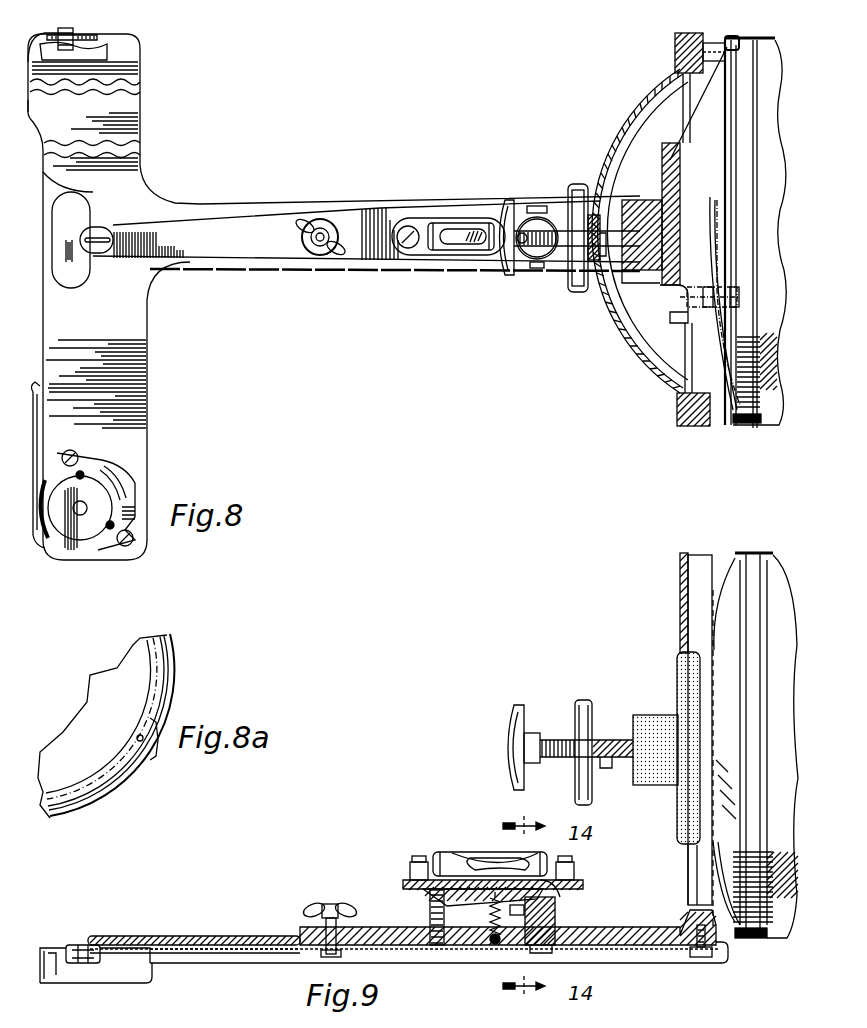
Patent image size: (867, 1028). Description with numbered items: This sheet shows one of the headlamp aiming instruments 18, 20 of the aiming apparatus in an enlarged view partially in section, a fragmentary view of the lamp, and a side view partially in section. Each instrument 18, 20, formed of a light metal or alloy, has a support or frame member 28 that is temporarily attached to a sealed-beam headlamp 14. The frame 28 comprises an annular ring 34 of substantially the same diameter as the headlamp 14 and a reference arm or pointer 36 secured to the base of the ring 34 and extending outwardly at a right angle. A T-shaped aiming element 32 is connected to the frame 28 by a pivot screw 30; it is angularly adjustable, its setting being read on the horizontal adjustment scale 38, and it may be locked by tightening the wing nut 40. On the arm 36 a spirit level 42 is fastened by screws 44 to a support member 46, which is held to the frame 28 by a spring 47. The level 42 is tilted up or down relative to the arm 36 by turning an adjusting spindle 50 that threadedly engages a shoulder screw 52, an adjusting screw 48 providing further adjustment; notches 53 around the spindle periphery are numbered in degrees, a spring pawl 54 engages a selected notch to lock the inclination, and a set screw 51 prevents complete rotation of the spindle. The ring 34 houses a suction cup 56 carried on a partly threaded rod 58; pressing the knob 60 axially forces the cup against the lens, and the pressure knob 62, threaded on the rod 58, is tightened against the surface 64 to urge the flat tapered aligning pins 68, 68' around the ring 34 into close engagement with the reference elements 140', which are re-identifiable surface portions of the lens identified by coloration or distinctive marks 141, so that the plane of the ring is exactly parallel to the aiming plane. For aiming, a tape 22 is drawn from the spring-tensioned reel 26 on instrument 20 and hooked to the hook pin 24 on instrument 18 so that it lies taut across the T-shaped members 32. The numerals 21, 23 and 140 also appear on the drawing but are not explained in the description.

In FIG. 8, the headlamp 14 is at (720, 112).
In FIG. 9, the headlamp 14 is at (706, 626).
In FIG. 8, the aiming instrument 18 is at (146, 60).
In FIG. 8, the aiming instrument 20 is at (198, 204).
In FIG. 8, the shoulder of bracket 21 is at (30, 118).
In FIG. 8, the tape 22 is at (38, 46).
In FIG. 8, the screw 23 is at (68, 455).
In FIG. 8, the hook pin 24 is at (70, 30).
In FIG. 8, the reel 26 is at (78, 556).
In FIG. 8, the frame member 28 is at (384, 214).
In FIG. 9, the frame member 28 is at (636, 924).
In FIG. 9, the pivot screw 30 is at (702, 962).
In FIG. 8, the T-shaped aiming element 32 is at (130, 136).
In FIG. 9, the T-shaped aiming element 32 is at (162, 966).
In FIG. 8, the ring 34 is at (626, 126).
In FIG. 9, the ring 34 is at (682, 568).
In FIG. 8, the reference arm 36 is at (156, 236).
In FIG. 9, the reference arm 36 is at (106, 932).
In FIG. 8, the horizontal adjustment scale 38 is at (55, 218).
In FIG. 9, the horizontal adjustment scale 38 is at (80, 936).
In FIG. 8, the wing nut 40 is at (330, 254).
In FIG. 9, the wing nut 40 is at (340, 912).
In FIG. 8, the spirit level 42 is at (442, 218).
In FIG. 9, the spirit level 42 is at (450, 856).
In FIG. 8, the screws 44 is at (408, 250).
In FIG. 9, the screws 44 is at (420, 858).
In FIG. 8, the support member 46 is at (468, 226).
In FIG. 9, the support member 46 is at (498, 890).
In FIG. 9, the spring 47 is at (486, 920).
In FIG. 9, the adjusting screw 48 is at (430, 916).
In FIG. 8, the adjusting spindle 50 is at (528, 262).
In FIG. 9, the adjusting spindle 50 is at (570, 904).
In FIG. 9, the set screw 51 is at (522, 904).
In FIG. 9, the shoulder screw 52 is at (540, 950).
In FIG. 8, the notches 53 is at (545, 216).
In FIG. 8, the spring pawl 54 is at (532, 210).
In FIG. 8, the suction cup 56 is at (660, 207).
In FIG. 9, the suction cup 56 is at (672, 716).
In FIG. 8, the rod 58 is at (594, 274).
In FIG. 9, the rod 58 is at (608, 762).
In FIG. 8, the knob 60 is at (505, 262).
In FIG. 9, the knob 60 is at (513, 716).
In FIG. 8, the pressure knob 62 is at (576, 184).
In FIG. 9, the pressure knob 62 is at (586, 700).
In FIG. 8, the surface 64 is at (594, 215).
In FIG. 9, the surface 64 is at (603, 738).
In FIG. 8, the aligning pins 68 is at (710, 277).
In FIG. 8, the seating pins 68' is at (728, 37).
In FIG. 8, the lens rim 140 is at (769, 297).
In FIG. 8, the surface portions 140' is at (765, 35).
In FIG. 8A, the surface portions 140' is at (111, 725).
In FIG. 8A, the distinctive marks 141 is at (125, 755).